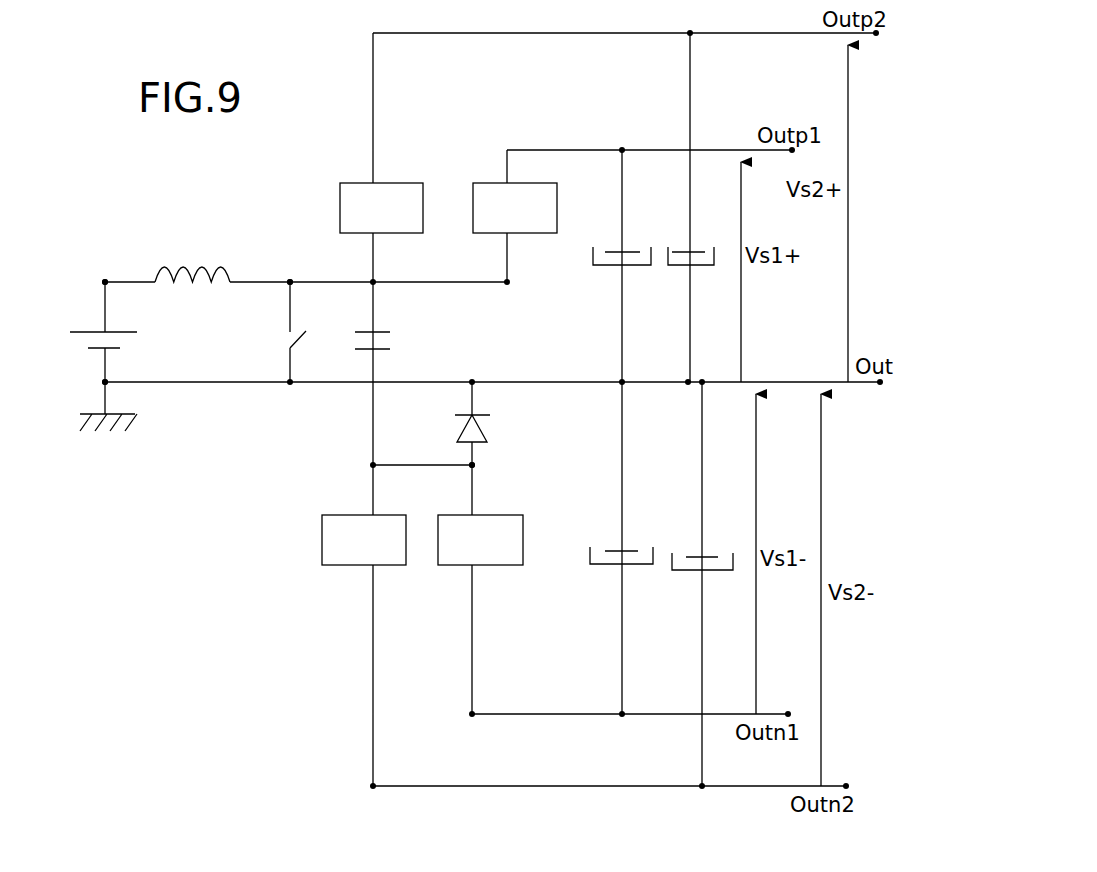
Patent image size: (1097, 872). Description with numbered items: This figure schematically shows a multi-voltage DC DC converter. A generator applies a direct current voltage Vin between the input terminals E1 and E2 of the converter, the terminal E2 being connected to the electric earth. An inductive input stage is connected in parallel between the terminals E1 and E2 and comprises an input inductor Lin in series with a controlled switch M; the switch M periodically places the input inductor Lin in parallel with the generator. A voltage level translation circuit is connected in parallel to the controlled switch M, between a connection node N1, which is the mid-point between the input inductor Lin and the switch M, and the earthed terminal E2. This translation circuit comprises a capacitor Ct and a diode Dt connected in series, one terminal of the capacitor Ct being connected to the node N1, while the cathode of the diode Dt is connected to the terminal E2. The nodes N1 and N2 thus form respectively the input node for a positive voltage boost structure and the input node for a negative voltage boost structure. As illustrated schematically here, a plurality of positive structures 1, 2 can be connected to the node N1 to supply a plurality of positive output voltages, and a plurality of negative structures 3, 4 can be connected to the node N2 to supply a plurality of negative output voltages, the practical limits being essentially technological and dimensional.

The first switching/converter unit 1 is at (343, 183).
The second switching/converter unit 2 is at (474, 184).
The third switching/converter unit 3 is at (344, 566).
The fourth switching/converter unit 4 is at (489, 566).
The input inductor Lin is at (192, 260).
The capacitor Ct is at (386, 342).
The diode Dt is at (486, 434).
The controlled switch M is at (282, 332).
The connection node N1 is at (290, 269).
The node N2 is at (478, 463).
The input terminal E1 is at (97, 270).
The input terminal E2 is at (87, 387).
The direct current voltage Vin is at (54, 382).